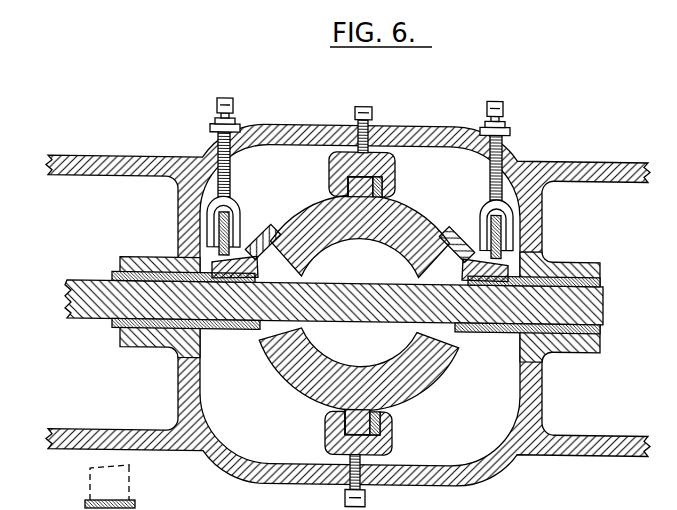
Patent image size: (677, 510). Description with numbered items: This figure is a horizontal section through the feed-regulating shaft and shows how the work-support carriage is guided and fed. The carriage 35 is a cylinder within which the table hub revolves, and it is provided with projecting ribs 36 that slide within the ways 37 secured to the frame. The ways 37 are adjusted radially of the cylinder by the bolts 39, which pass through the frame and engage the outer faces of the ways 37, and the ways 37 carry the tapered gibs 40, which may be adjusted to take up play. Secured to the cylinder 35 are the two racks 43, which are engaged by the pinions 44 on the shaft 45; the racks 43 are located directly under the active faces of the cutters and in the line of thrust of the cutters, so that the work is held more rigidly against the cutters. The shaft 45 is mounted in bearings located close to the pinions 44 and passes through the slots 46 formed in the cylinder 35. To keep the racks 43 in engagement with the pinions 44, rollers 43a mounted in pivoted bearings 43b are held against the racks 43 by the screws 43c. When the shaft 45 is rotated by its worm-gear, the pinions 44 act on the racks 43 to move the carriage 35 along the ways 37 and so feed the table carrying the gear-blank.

The carriage 35 is at (418, 372).
The projecting ribs 36 is at (373, 194).
The ways 37 is at (390, 164).
The bolts 39 is at (373, 105).
The tapered gibs 40 is at (395, 185).
The racks 43 is at (252, 231).
The rollers 43a is at (238, 210).
The pivoted bearings 43b is at (233, 200).
The screws 43c is at (232, 169).
The pinions 44 is at (240, 321).
The shaft 45 is at (356, 305).
The slots 46 is at (440, 327).